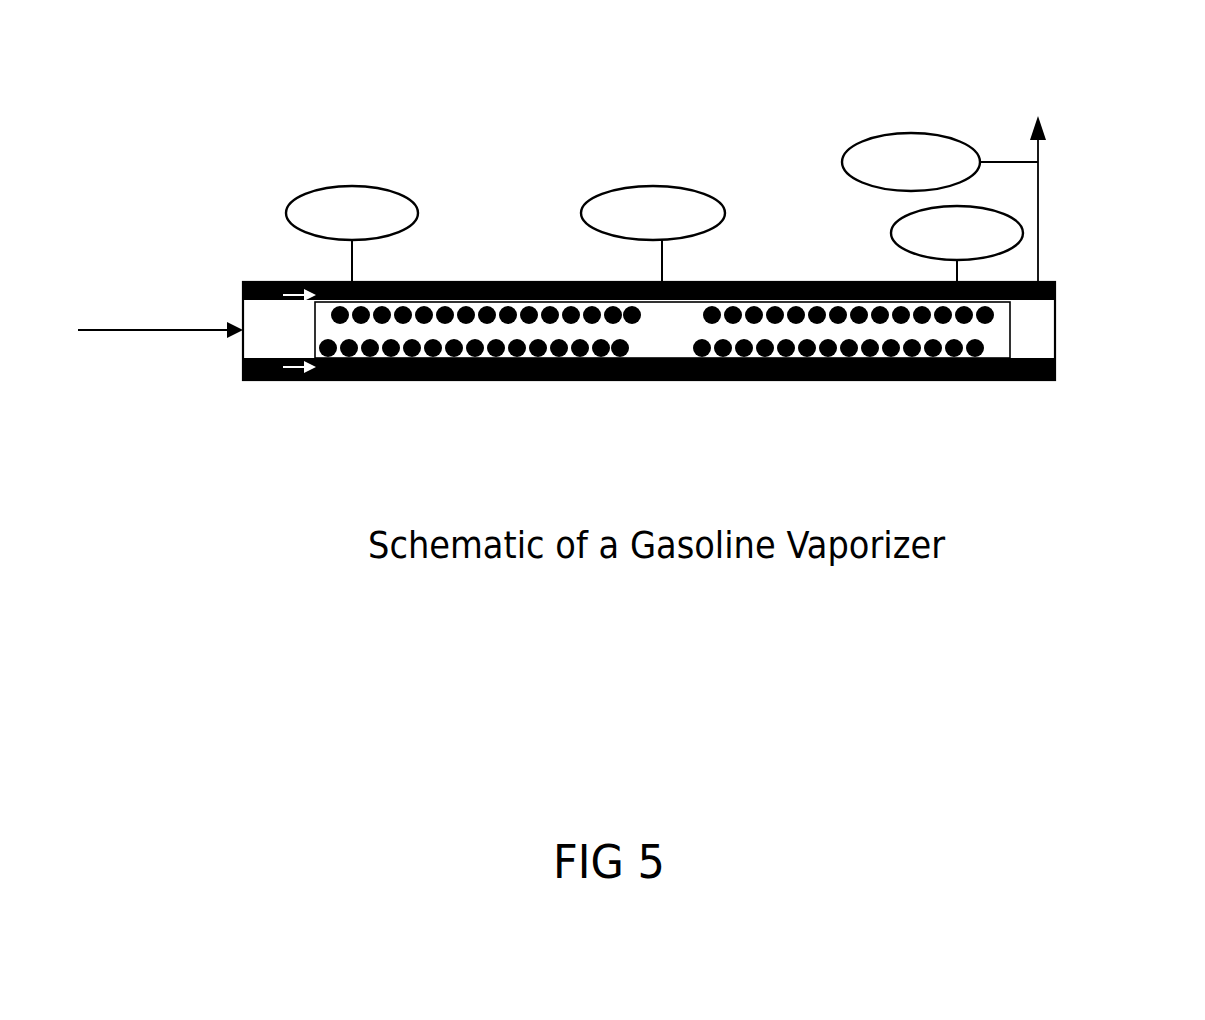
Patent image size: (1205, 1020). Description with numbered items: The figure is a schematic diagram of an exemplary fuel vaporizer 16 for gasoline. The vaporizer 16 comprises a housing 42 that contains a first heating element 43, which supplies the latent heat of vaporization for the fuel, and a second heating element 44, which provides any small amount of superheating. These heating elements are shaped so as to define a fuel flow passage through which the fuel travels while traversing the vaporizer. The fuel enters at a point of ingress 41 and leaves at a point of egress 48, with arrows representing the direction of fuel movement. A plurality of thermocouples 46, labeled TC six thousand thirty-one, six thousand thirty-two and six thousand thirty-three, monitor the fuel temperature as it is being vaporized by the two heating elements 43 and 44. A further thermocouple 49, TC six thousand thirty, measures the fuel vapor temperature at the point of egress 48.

The fuel vaporizer 16 is at (883, 672).
The point of ingress 41 is at (195, 332).
The housing 42 is at (960, 380).
The first heating element 43 is at (505, 330).
The second heating element 44 is at (815, 331).
The thermocouples 46 is at (349, 183).
The point of egress 48 is at (1040, 247).
The thermocouple 49 is at (913, 130).